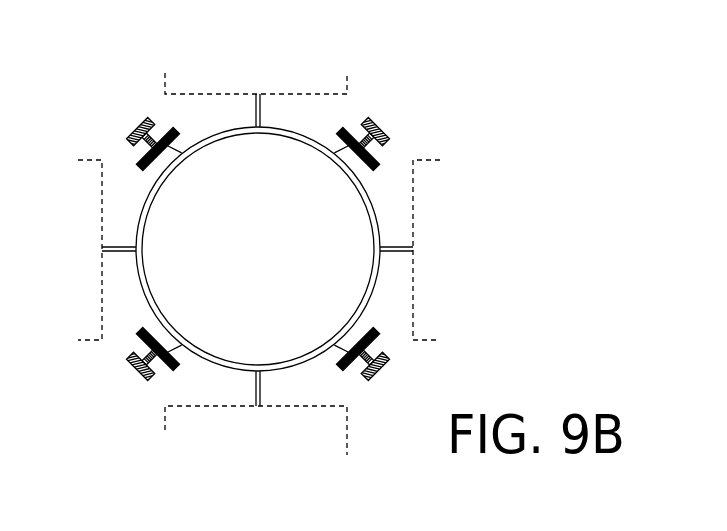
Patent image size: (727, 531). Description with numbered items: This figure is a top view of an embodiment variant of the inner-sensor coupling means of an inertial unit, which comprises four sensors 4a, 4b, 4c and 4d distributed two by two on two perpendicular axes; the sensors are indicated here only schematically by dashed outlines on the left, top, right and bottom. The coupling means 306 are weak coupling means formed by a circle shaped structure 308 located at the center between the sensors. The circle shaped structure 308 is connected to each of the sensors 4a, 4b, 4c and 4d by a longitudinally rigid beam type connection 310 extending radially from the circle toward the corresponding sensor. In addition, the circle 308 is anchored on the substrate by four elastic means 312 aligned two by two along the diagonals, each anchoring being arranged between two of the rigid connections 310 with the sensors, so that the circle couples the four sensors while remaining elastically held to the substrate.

The coupling means 306 is at (413, 89).
The circle shaped structure 308 is at (302, 130).
The longitudinally rigid beam type connection 310 is at (397, 242).
The elastic means 312 is at (332, 150).
The sensor 4a is at (75, 331).
The sensor 4b is at (179, 72).
The sensor 4c is at (439, 164).
The sensor 4d is at (342, 434).